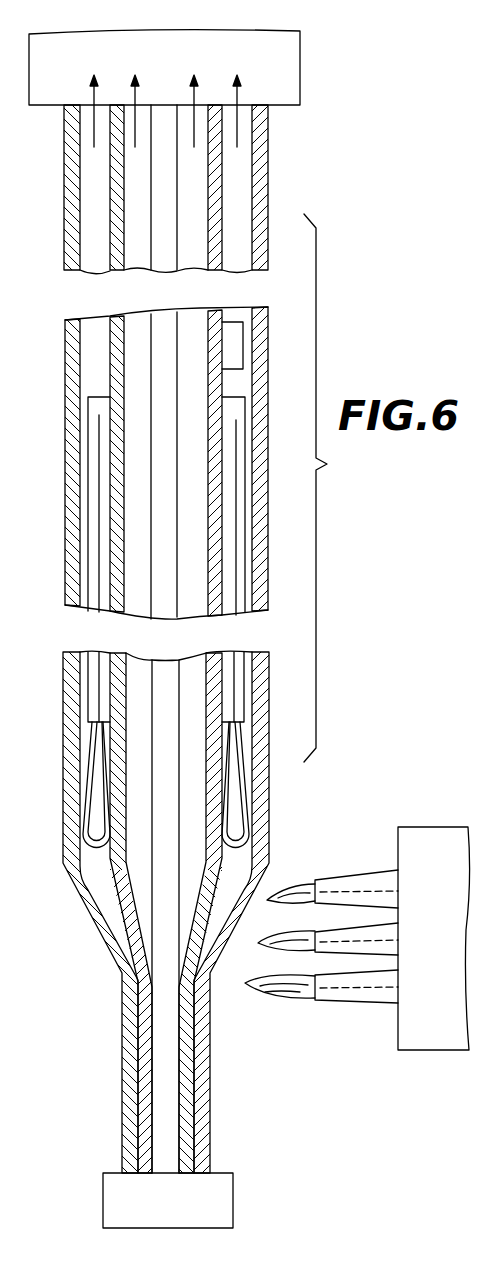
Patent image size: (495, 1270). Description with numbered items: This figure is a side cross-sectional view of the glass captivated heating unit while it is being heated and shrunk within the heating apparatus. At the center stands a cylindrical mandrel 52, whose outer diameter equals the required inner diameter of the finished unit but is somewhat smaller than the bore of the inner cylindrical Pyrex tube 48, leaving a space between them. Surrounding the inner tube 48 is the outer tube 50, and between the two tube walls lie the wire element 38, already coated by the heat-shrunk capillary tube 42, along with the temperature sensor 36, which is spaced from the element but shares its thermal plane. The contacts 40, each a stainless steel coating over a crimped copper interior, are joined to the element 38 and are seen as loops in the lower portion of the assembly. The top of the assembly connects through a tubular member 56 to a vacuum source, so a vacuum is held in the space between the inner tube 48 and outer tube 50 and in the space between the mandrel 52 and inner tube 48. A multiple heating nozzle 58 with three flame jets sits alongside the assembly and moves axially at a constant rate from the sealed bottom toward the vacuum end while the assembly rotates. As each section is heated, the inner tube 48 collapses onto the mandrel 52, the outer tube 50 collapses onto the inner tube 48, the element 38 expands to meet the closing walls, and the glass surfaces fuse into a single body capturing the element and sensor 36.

The temperature sensor 36 is at (236, 352).
The wire element 38 is at (98, 466).
The contacts 40 is at (88, 850).
The capillary tube 42 is at (92, 407).
The inner cylindrical Pyrex tube 48 is at (224, 152).
The outer tube 50 is at (268, 187).
The cylindrical mandrel 52 is at (159, 117).
The tubular member 56 is at (292, 65).
The multiple heating nozzle 58 is at (428, 843).